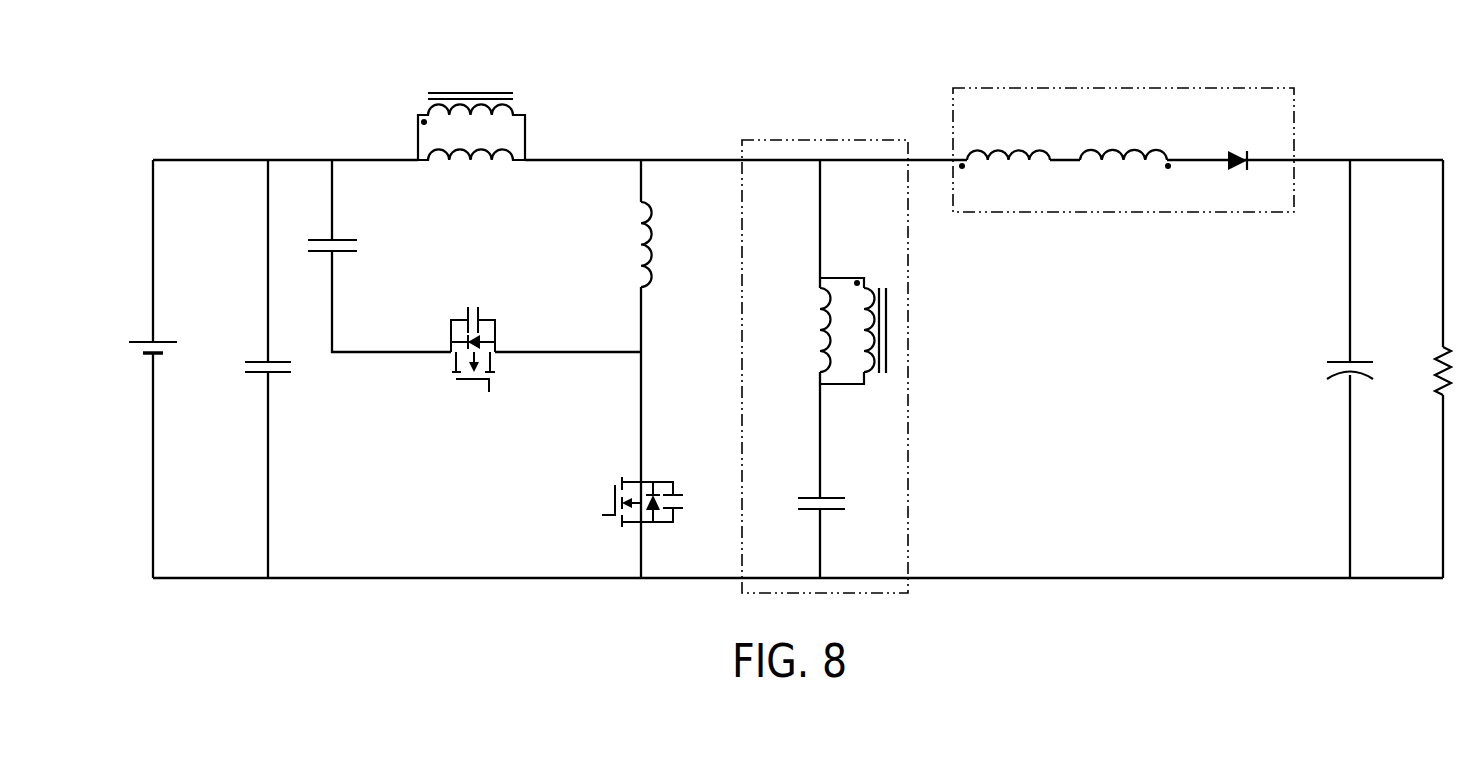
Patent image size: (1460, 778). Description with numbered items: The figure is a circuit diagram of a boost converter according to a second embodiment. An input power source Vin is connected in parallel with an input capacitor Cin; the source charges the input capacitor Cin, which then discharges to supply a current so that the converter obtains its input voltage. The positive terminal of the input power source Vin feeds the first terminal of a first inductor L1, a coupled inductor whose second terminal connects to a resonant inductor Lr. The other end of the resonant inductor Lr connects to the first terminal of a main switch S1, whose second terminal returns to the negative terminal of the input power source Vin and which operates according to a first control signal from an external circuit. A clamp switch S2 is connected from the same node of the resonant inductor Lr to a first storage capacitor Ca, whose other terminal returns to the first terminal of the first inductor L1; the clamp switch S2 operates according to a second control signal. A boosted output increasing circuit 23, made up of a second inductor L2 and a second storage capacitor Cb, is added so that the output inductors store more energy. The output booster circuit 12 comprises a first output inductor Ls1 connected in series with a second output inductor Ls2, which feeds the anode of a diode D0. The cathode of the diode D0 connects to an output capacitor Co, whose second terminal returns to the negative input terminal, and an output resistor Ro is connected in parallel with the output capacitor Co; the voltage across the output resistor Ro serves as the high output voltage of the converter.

The output booster circuit 12 is at (1124, 88).
The boosted output increasing circuit 23 is at (823, 140).
The input power source Vin is at (130, 345).
The input capacitor Cin is at (244, 367).
The first storage capacitor Ca is at (348, 248).
The first inductor L1 is at (471, 143).
The resonant inductor Lr is at (662, 244).
The main switch S1 is at (624, 502).
The clamp switch S2 is at (492, 349).
The second inductor L2 is at (834, 331).
The second storage capacitor Cb is at (801, 505).
The first output inductor Ls1 is at (1004, 141).
The second output inductor Ls2 is at (1125, 141).
The diode D0 is at (1239, 177).
The output capacitor Co is at (1330, 372).
The output resistor Ro is at (1424, 371).